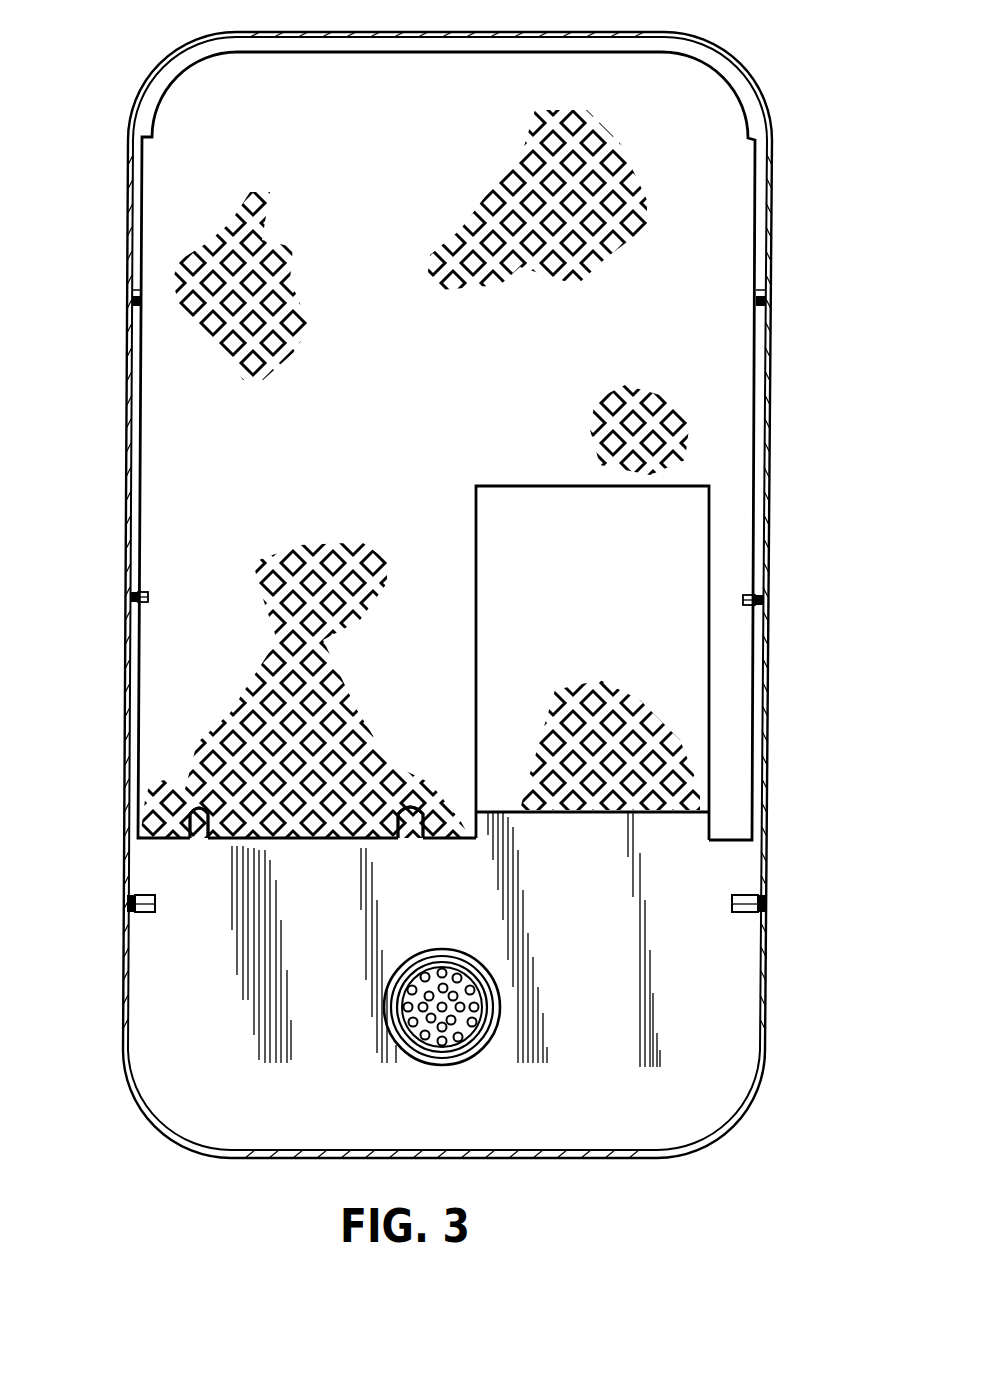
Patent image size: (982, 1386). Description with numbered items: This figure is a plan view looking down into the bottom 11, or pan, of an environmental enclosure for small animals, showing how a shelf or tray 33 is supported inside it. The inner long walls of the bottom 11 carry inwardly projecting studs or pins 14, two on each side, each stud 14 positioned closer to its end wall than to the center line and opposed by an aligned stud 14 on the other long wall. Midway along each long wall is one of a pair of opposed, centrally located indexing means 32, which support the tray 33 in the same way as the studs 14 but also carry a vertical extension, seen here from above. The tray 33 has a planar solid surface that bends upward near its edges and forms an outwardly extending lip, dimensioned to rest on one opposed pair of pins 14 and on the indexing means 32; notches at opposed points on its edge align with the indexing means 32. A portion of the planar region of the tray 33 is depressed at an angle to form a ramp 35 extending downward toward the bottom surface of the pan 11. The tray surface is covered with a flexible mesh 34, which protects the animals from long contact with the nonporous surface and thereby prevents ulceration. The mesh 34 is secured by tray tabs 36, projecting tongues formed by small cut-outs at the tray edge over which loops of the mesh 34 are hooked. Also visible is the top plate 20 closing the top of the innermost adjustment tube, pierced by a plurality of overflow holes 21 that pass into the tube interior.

The bottom 11 is at (122, 991).
The studs 14 is at (133, 296).
The top plate 20 is at (442, 1052).
The overflow holes 21 is at (443, 969).
The indexing means 32 is at (132, 588).
The tray 33 is at (708, 383).
The mesh 34 is at (686, 429).
The ramp 35 is at (663, 555).
The tray tabs 36 is at (200, 827).